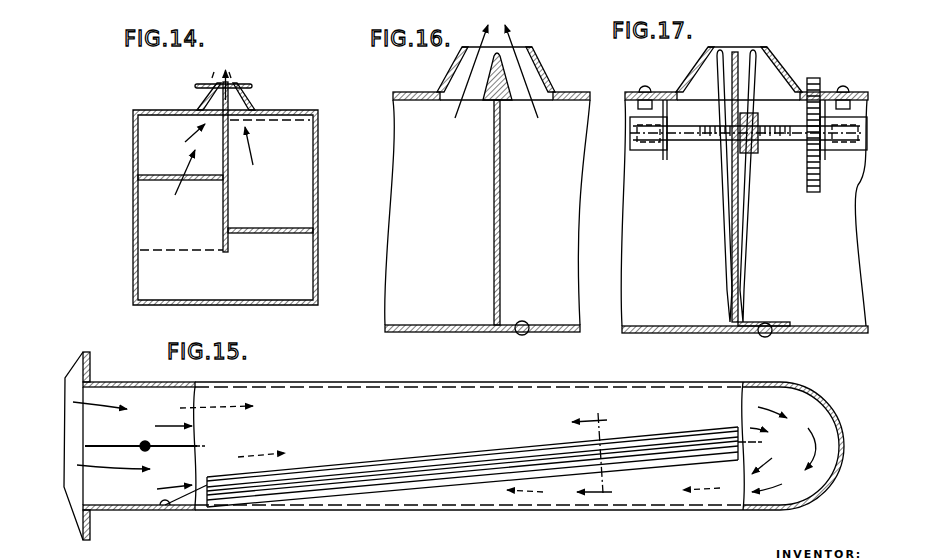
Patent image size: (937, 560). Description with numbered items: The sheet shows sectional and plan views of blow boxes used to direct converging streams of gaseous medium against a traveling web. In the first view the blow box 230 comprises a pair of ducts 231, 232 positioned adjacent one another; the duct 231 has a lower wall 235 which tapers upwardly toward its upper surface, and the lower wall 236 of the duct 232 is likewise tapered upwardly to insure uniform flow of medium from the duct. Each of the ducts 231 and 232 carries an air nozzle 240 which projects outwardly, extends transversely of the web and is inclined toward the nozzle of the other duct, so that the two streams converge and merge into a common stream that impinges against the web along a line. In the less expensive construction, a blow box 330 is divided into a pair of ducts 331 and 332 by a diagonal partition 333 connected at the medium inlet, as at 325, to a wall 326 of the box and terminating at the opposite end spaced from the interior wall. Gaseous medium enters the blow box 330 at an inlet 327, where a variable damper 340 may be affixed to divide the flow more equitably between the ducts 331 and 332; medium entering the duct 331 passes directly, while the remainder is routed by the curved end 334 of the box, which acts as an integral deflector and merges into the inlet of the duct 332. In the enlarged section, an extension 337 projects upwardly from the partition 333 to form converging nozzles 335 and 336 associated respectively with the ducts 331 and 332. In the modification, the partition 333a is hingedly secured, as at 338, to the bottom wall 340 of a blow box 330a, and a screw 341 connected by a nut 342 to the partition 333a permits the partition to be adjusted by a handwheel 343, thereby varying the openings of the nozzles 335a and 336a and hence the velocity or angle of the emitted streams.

In FIG. 14, the blow box 230 is at (128, 143).
In FIG. 14, the duct 231 is at (148, 162).
In FIG. 14, the duct 232 is at (300, 183).
In FIG. 14, the lower wall 235 is at (188, 180).
In FIG. 14, the lower wall 236 is at (278, 233).
In FIG. 14, the air nozzle 240 is at (200, 98).
In FIG. 15, the medium inlet connection 325 is at (160, 506).
In FIG. 15, the wall 326 is at (194, 510).
In FIG. 15, the inlet 327 is at (83, 388).
In FIG. 16, the blow box 330 is at (393, 298).
In FIG. 15, the blow box 330 is at (360, 366).
In FIG. 17, the blow box 330a is at (798, 333).
In FIG. 16, the duct 331 is at (563, 312).
In FIG. 15, the duct 331 is at (455, 386).
In FIG. 16, the duct 332 is at (455, 318).
In FIG. 15, the duct 332 is at (480, 504).
In FIG. 16, the diagonal partition 333 is at (494, 219).
In FIG. 15, the diagonal partition 333 is at (418, 475).
In FIG. 17, the partition 333a is at (732, 286).
In FIG. 15, the curved end 334 is at (823, 412).
In FIG. 16, the nozzle 335 is at (548, 80).
In FIG. 17, the nozzle 335a is at (838, 52).
In FIG. 16, the nozzle 336 is at (447, 67).
In FIG. 17, the nozzle 336a is at (690, 78).
In FIG. 16, the extension 337 is at (492, 85).
In FIG. 17, the hinge 338 is at (744, 322).
In FIG. 17, the damper / bottom wall 340 is at (705, 333).
In FIG. 15, the damper / bottom wall 340 is at (117, 434).
In FIG. 17, the screw 341 is at (710, 143).
In FIG. 17, the nut 342 is at (758, 153).
In FIG. 17, the handwheel 343 is at (813, 192).